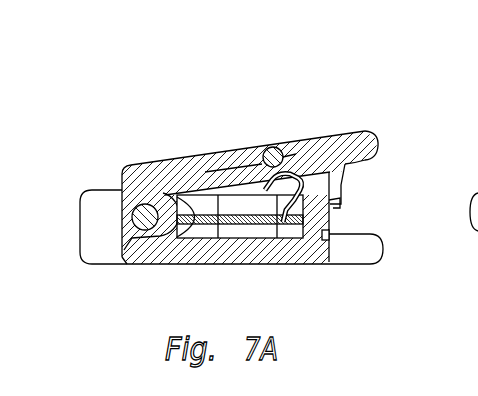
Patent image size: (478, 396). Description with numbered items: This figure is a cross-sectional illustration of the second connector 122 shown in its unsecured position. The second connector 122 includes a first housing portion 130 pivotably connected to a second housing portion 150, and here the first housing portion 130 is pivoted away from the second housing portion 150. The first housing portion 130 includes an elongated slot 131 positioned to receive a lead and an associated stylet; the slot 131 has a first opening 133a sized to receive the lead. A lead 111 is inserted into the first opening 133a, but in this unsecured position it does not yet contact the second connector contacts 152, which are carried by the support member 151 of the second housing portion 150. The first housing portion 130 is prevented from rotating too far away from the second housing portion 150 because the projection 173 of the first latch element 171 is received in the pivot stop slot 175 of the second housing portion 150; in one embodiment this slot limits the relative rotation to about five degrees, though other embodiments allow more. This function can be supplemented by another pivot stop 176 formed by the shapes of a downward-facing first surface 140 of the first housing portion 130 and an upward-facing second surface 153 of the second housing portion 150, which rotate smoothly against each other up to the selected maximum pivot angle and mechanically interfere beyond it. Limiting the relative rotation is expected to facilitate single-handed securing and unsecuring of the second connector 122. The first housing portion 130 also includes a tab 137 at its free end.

The second connector 122 is at (170, 104).
The second housing portion 150 is at (370, 255).
The pivot stop 176 is at (112, 242).
The first surface 140 is at (152, 266).
The first housing portion 130 is at (327, 133).
The second connector contacts 152 is at (377, 141).
The slide tab 137 is at (315, 170).
The slot 131 is at (268, 138).
The first opening 133a is at (247, 163).
The lead 111 is at (291, 148).
The second surface 153 is at (160, 178).
The support member 151 is at (272, 263).
The pivot stop slot 175 is at (321, 263).
The first latch element 171 is at (341, 192).
The projection 173 is at (343, 228).